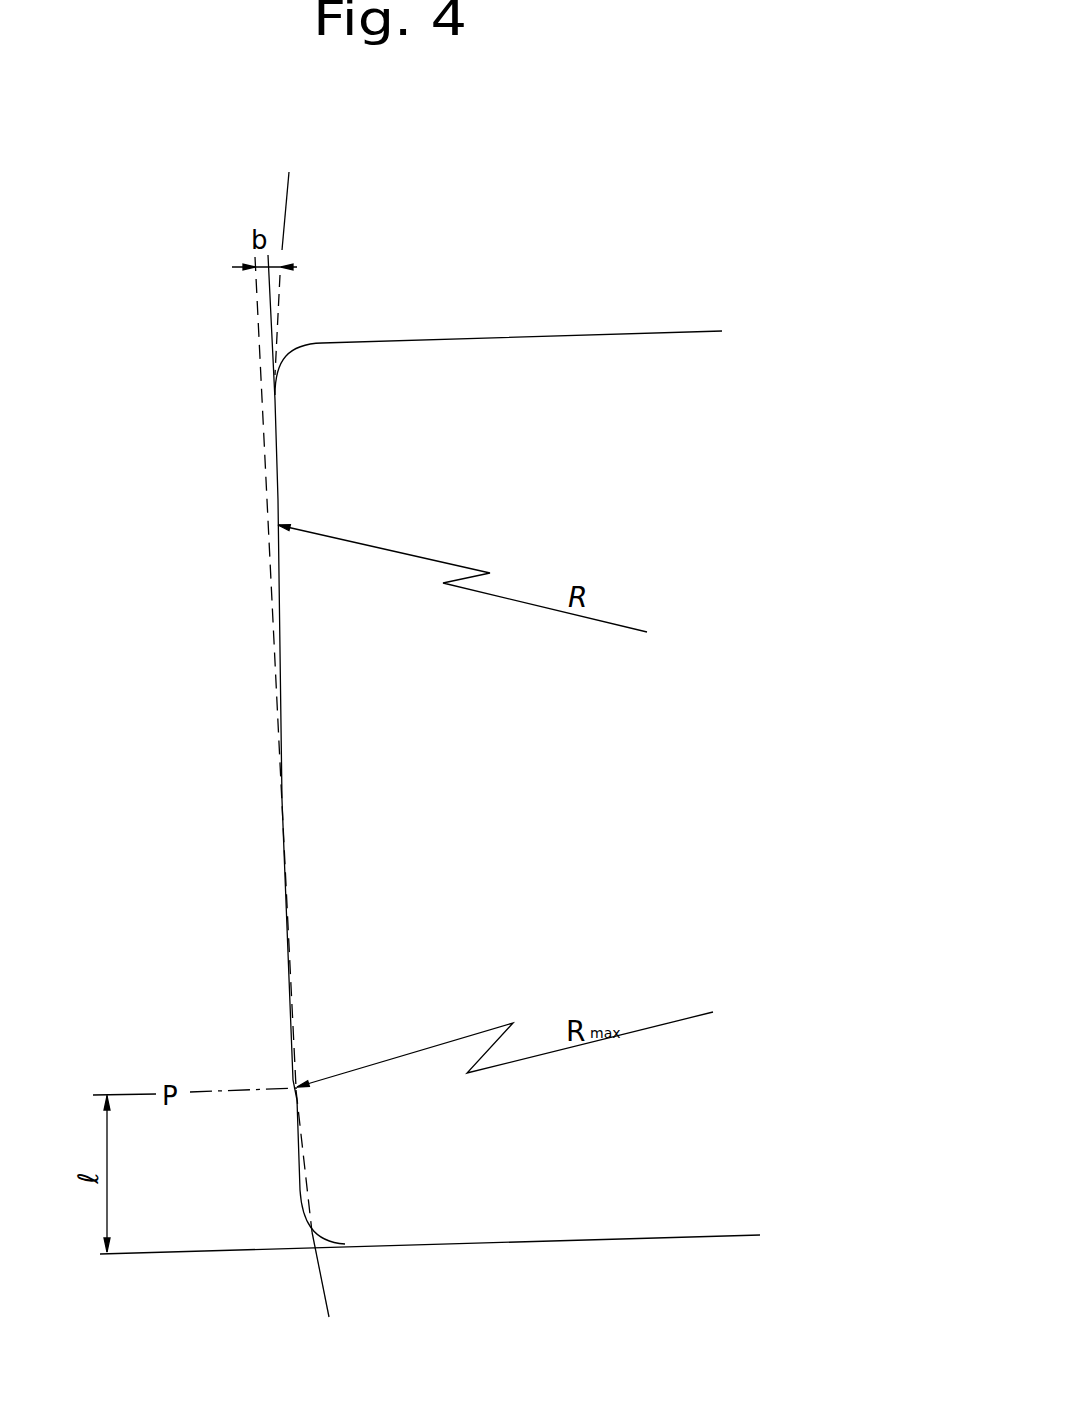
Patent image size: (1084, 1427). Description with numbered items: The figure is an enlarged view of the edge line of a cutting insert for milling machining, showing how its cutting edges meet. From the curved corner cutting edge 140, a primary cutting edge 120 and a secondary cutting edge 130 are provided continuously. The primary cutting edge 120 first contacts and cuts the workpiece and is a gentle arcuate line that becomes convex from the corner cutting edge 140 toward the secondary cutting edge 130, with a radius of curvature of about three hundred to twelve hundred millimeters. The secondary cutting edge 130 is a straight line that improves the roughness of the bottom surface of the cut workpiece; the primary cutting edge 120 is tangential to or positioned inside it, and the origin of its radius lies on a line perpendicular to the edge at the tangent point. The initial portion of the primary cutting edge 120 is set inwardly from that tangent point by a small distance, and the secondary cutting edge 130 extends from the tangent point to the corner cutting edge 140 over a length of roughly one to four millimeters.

The primary cutting edge 120 is at (279, 612).
The secondary cutting edge 130 is at (297, 1147).
The corner cutting edge 140 is at (315, 1246).